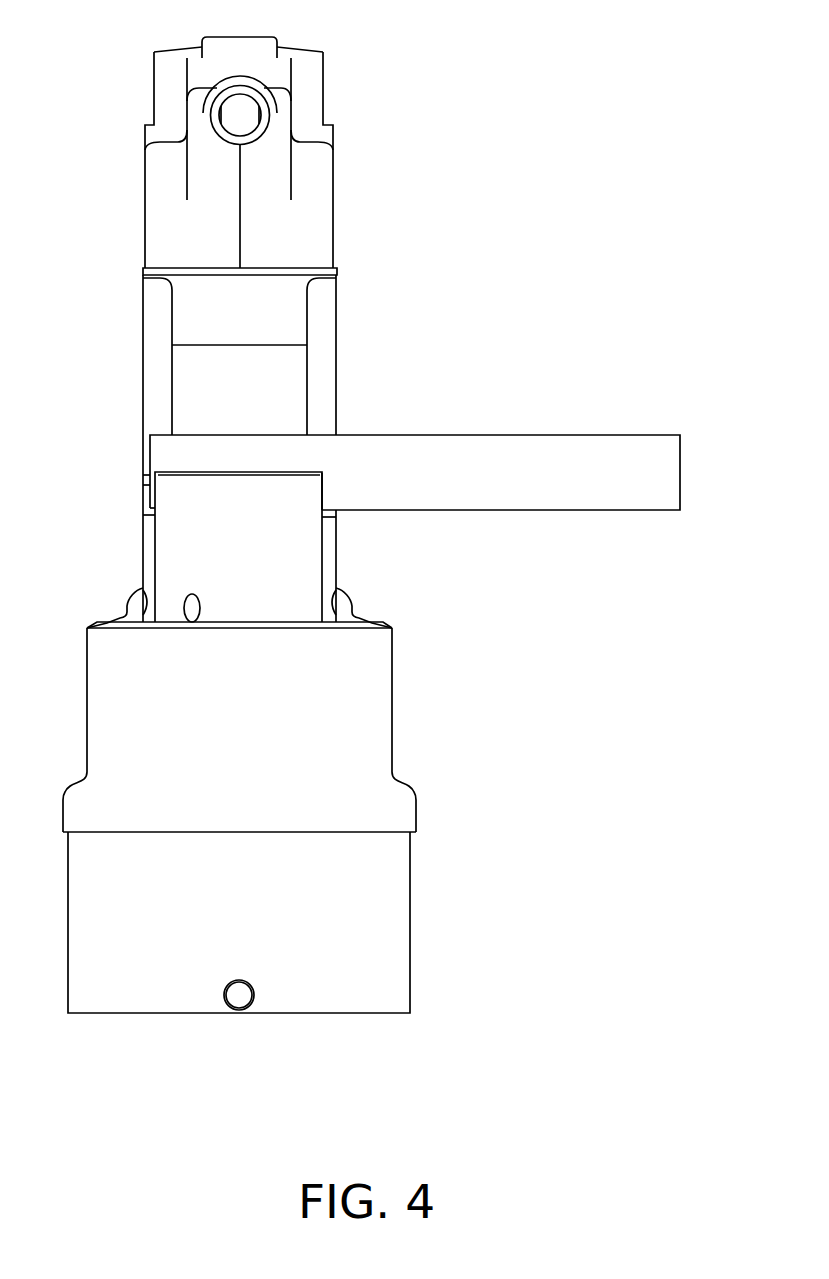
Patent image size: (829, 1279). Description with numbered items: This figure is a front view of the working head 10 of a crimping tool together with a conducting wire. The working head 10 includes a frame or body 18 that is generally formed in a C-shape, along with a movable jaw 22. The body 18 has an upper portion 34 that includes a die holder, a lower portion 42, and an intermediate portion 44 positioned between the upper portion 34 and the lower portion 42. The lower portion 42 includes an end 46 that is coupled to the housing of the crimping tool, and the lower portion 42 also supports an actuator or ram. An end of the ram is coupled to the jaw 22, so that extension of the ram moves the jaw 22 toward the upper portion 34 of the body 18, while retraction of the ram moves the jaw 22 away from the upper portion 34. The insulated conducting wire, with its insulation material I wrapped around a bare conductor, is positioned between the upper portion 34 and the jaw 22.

The working head 10 is at (403, 44).
The upper portion 34 is at (315, 132).
The body 18 is at (161, 313).
The intermediate portion 44 is at (277, 390).
The insulation material I is at (605, 462).
The movable jaw 22 is at (283, 565).
The lower portion 42 is at (348, 715).
The end 46 is at (355, 1015).